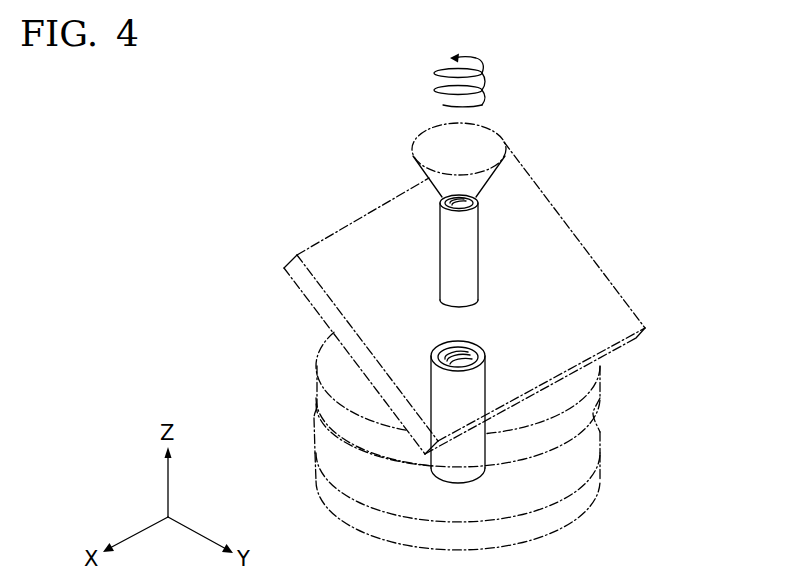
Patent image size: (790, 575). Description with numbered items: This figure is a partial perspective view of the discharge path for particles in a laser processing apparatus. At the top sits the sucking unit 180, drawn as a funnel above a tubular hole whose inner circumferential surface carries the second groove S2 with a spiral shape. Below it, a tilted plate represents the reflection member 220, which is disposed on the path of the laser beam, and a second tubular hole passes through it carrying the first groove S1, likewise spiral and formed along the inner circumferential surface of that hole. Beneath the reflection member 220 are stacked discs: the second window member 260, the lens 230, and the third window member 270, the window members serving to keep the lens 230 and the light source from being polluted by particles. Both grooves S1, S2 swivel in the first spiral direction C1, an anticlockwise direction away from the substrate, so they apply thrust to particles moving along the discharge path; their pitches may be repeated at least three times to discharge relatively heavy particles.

The sucking unit 180 is at (497, 143).
The reflection member 220 is at (611, 300).
The second window member 260 is at (600, 395).
The lens 230 is at (600, 430).
The third window member 270 is at (600, 477).
The first groove S1 is at (440, 346).
The second groove S2 is at (443, 198).
The first spiral direction C1 is at (452, 71).